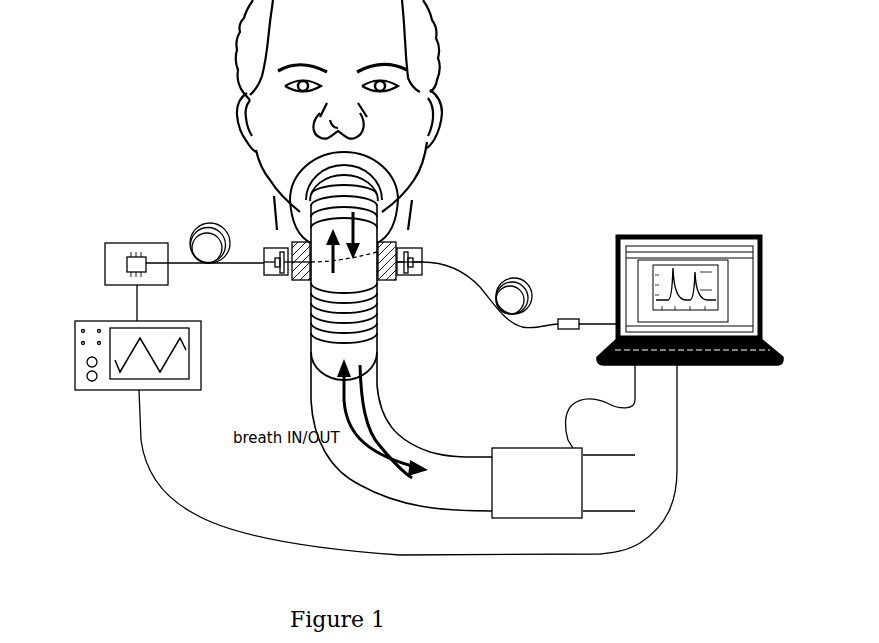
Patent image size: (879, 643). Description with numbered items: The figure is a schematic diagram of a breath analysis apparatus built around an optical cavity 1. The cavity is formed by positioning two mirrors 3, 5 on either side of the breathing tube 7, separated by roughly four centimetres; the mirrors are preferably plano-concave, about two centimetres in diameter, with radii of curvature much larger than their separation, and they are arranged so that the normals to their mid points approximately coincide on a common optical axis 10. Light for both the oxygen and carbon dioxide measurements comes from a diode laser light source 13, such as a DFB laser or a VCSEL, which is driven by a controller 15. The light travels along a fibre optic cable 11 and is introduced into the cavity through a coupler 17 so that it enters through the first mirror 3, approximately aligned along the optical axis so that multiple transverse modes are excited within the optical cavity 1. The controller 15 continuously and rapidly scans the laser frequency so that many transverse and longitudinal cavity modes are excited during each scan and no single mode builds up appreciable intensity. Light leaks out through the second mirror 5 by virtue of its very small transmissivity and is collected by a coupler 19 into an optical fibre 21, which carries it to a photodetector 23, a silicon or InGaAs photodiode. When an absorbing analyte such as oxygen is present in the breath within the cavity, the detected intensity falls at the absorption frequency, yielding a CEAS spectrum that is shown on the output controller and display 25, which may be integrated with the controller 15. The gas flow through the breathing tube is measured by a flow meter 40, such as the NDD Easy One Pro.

The optical cavity 1 is at (353, 269).
The mirror 3 is at (299, 283).
The second mirror 5 is at (399, 281).
The breathing tube 7 is at (380, 328).
The optical axis 10 is at (321, 258).
The fibre optic cable 11 is at (207, 221).
The diode laser light source 13 is at (127, 248).
The controller 15 is at (125, 355).
The coupler 17 is at (264, 276).
The coupler 19 is at (417, 250).
The optical fibre 21 is at (526, 278).
The photodetector 23 is at (566, 333).
The output controller and display 25 is at (690, 289).
The flow meter 40 is at (563, 483).